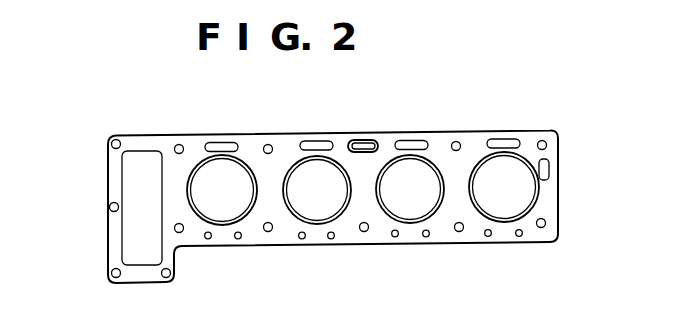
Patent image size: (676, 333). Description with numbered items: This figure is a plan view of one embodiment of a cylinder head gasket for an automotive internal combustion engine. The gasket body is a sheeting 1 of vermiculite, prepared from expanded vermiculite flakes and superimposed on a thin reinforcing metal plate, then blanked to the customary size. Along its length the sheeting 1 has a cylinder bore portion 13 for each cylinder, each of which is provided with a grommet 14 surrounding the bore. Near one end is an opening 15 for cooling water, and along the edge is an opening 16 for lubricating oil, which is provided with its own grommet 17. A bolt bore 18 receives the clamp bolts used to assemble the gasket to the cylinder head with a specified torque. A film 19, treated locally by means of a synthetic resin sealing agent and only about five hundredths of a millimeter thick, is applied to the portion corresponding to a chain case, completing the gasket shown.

The sheeting of vermiculite 1 is at (472, 143).
The cylinder bore portion 13 is at (317, 207).
The grommet 14 is at (295, 218).
The opening for cooling water 15 is at (549, 171).
The opening for lubricating oil 16 is at (360, 145).
The grommet 17 is at (367, 139).
The bolt bore 18 is at (179, 144).
The film 19 is at (112, 173).